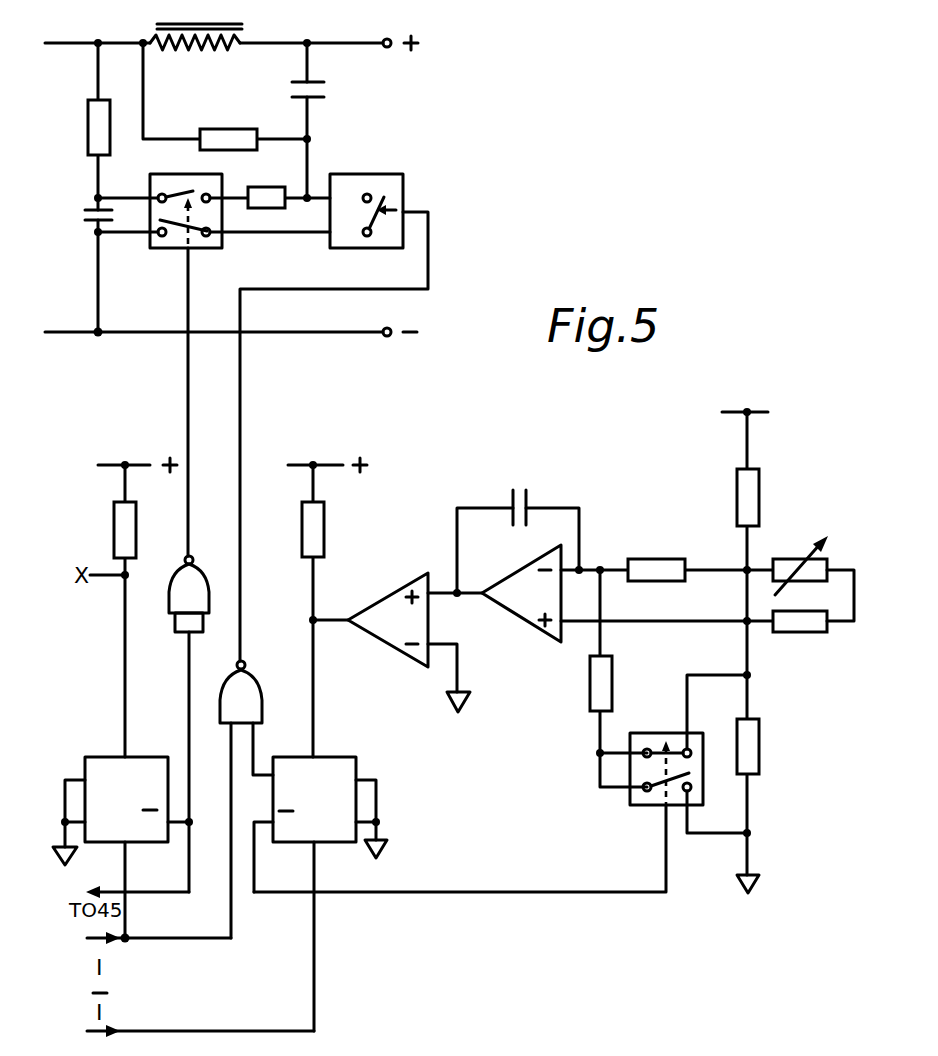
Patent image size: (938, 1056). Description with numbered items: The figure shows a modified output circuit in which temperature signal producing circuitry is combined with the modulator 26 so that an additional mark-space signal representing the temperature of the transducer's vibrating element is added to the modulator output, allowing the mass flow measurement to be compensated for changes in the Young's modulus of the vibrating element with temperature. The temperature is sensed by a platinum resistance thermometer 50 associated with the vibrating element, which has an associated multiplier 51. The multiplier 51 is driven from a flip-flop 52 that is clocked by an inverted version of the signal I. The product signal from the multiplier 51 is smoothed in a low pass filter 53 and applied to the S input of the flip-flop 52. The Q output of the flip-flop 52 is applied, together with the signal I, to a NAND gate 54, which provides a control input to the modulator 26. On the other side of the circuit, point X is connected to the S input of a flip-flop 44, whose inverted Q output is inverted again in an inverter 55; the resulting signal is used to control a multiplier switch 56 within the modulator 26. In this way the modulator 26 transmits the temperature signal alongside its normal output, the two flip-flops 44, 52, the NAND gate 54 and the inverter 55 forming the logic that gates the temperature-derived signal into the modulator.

The modulator 26 is at (236, 342).
The multiplier switch 56 is at (160, 250).
The inverter 55 is at (198, 565).
The NAND gate 54 is at (256, 677).
The flip-flop 44 is at (112, 756).
The flip-flop 52 is at (357, 757).
The low pass filter 53 is at (530, 627).
The platinum resistance thermometer 50 is at (822, 585).
The multiplier 51 is at (677, 808).